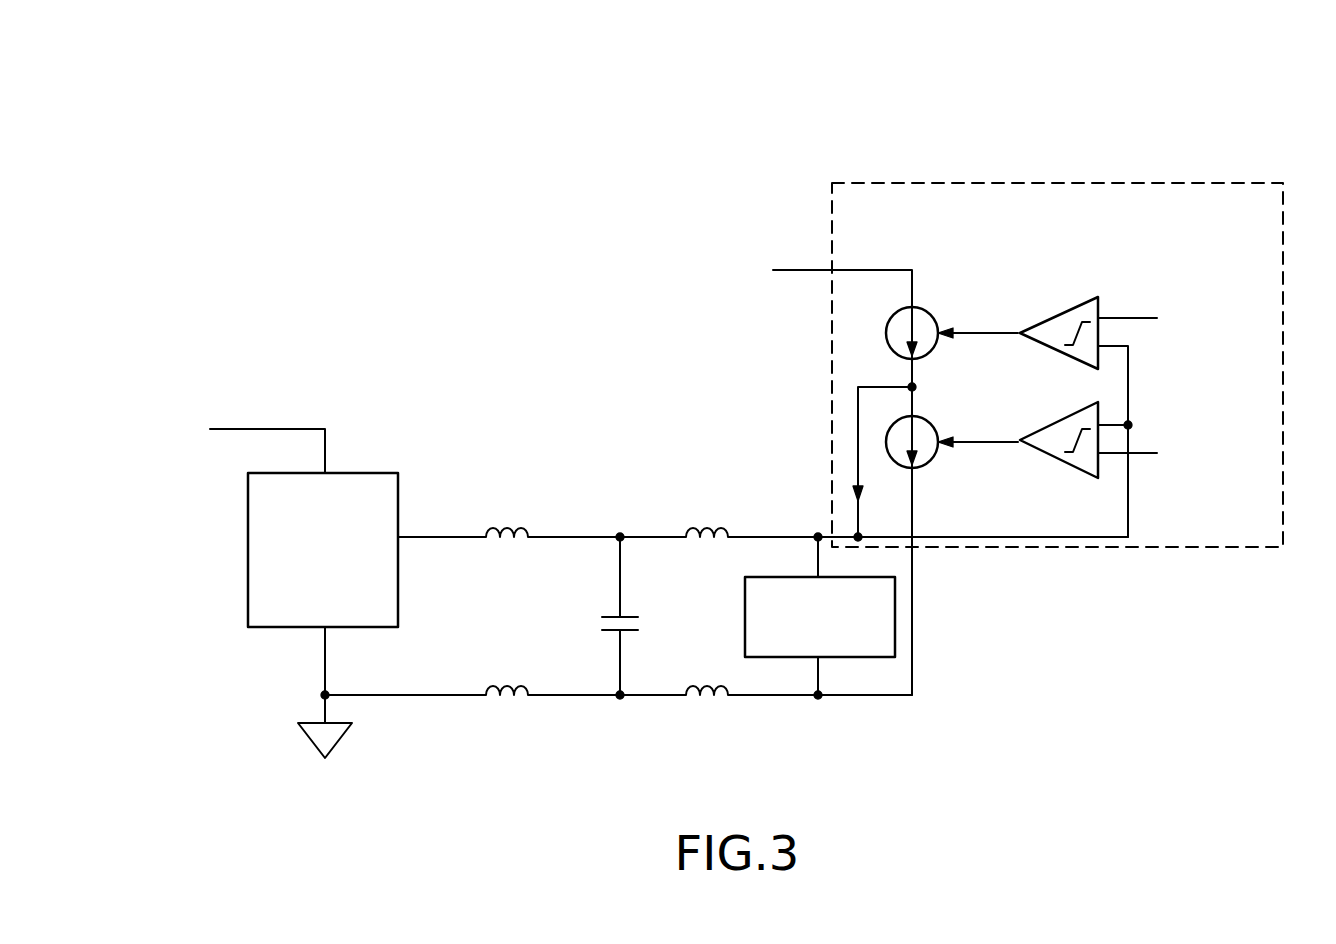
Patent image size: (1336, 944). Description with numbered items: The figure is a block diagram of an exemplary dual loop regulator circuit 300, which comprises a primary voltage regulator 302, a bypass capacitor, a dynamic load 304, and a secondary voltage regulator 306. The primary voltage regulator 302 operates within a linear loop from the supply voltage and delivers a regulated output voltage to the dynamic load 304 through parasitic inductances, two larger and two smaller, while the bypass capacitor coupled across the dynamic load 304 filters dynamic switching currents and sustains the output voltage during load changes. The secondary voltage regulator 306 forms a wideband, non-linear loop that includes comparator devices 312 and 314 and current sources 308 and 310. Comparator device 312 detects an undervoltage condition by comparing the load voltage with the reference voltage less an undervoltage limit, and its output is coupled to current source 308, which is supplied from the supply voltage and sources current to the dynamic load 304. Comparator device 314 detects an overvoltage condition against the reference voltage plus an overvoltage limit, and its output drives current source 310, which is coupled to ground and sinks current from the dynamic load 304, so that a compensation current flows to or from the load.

The dual loop regulator circuit 300 is at (621, 141).
The primary voltage regulator 302 is at (398, 490).
The dynamic load 304 is at (873, 657).
The secondary voltage regulator 306 is at (1048, 183).
The current source 308 is at (931, 315).
The current source 310 is at (931, 460).
The comparator device 312 is at (1105, 309).
The comparator device 314 is at (1078, 470).